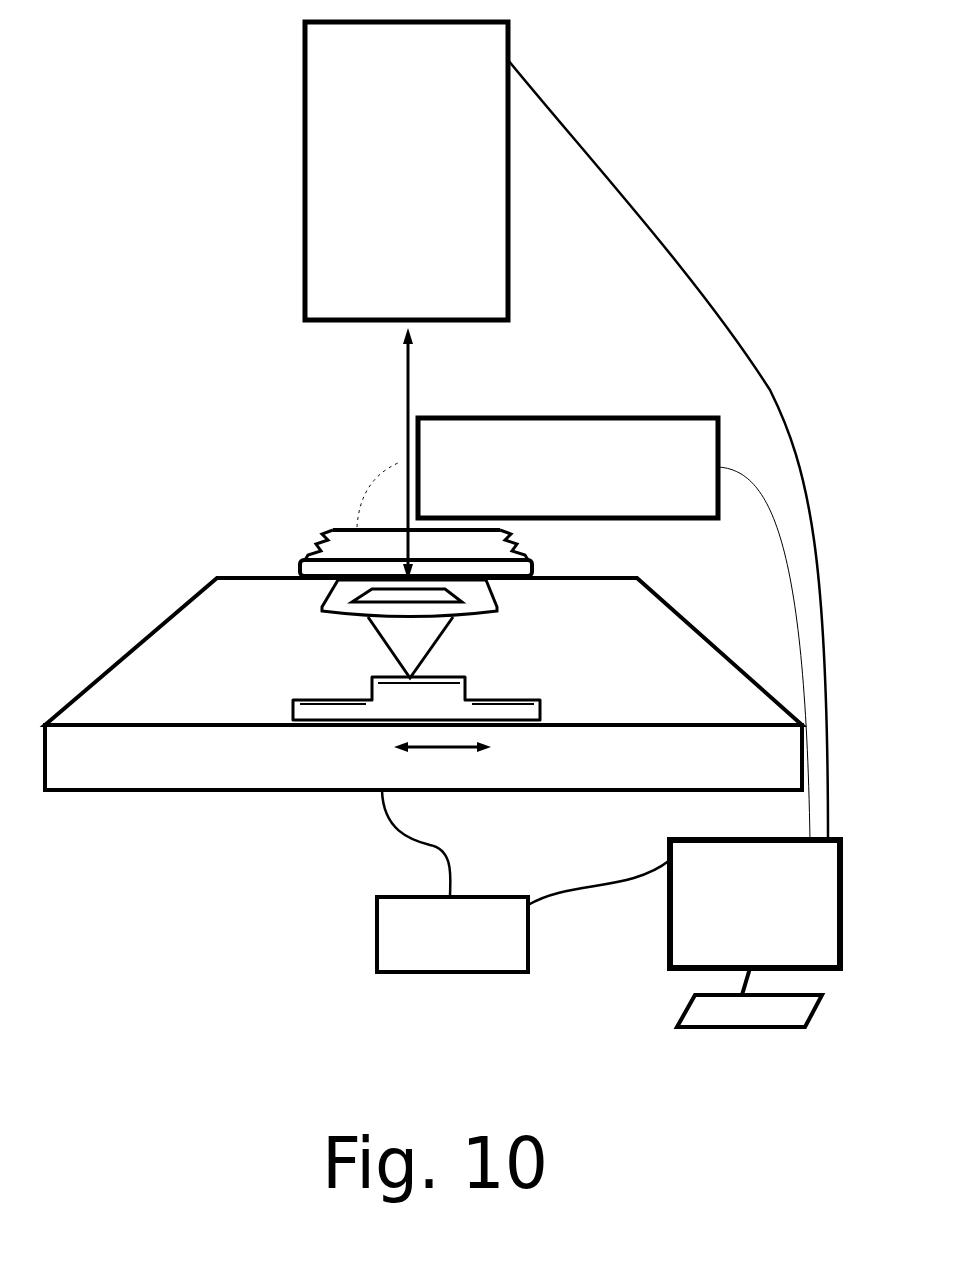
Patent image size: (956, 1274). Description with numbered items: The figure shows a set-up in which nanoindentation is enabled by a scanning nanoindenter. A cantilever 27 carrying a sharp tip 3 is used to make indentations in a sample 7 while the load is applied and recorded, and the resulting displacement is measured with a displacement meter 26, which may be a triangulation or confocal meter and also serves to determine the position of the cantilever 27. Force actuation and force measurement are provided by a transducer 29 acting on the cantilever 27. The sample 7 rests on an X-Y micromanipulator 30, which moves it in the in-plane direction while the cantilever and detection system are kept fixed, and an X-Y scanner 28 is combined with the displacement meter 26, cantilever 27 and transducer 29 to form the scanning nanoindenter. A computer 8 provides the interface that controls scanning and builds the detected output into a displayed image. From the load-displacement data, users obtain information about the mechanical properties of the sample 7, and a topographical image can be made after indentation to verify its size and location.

The displacement meter 26 is at (302, 170).
The transducer 29 is at (550, 412).
The cantilever 27 is at (322, 605).
The sharp tip 3 is at (380, 645).
The sample 7 is at (417, 697).
The X-Y micromanipulator 30 is at (200, 768).
The X-Y scanner 28 is at (480, 975).
The computer 8 is at (775, 1030).